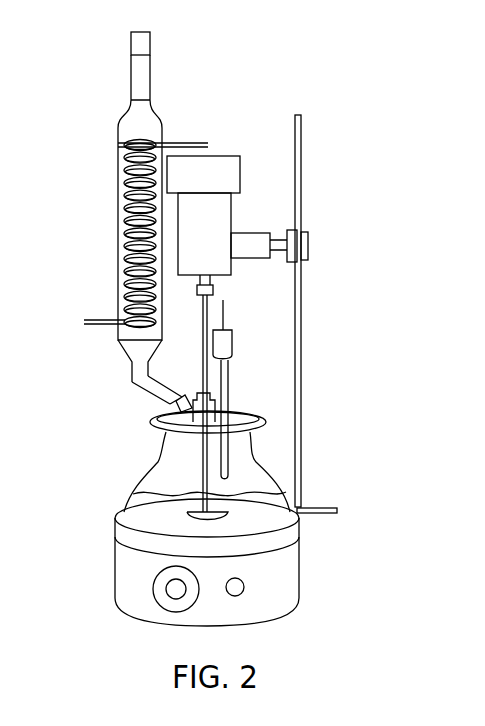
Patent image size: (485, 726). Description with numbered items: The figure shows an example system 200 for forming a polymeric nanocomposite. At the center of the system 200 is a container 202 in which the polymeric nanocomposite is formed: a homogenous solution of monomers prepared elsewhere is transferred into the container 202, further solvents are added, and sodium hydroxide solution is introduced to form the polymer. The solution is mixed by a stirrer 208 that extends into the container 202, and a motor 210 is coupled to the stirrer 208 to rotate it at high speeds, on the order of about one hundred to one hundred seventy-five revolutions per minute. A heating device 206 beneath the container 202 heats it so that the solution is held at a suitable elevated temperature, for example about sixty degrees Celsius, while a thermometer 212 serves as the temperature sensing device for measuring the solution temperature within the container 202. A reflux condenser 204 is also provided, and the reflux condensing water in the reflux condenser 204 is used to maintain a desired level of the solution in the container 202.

The system 200 is at (381, 67).
The container 202 is at (257, 478).
The reflux condenser 204 is at (138, 108).
The heating device 206 is at (280, 554).
The stirrer 208 is at (299, 508).
The motor 210 is at (210, 245).
The thermometer 212 is at (246, 349).